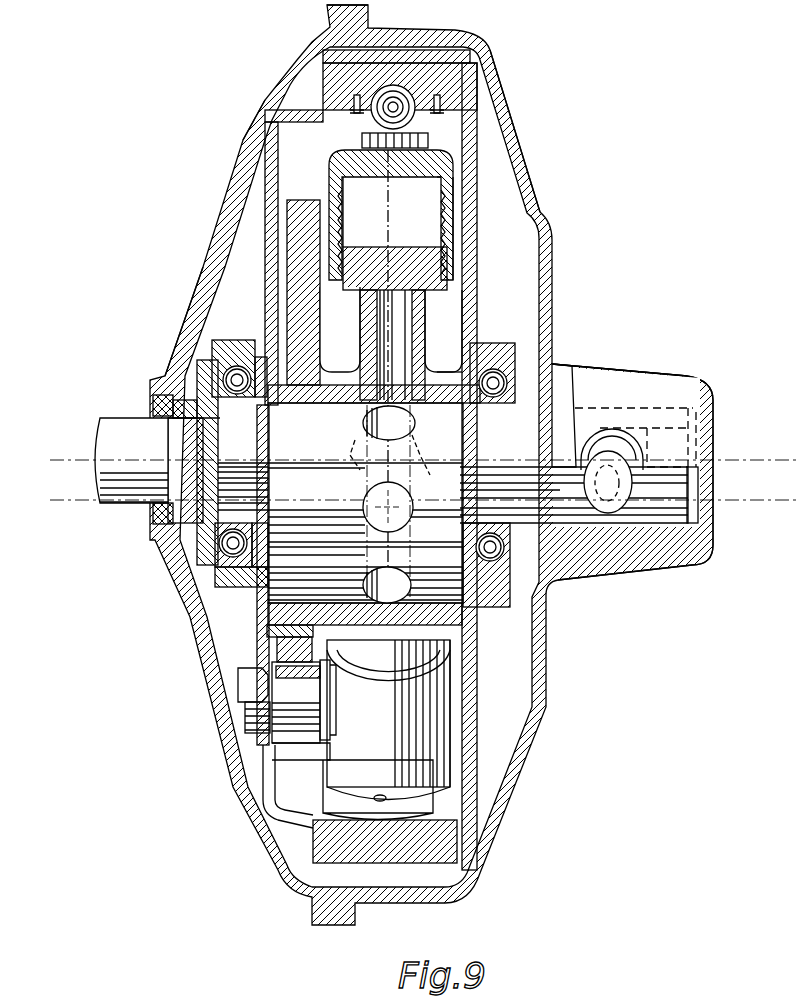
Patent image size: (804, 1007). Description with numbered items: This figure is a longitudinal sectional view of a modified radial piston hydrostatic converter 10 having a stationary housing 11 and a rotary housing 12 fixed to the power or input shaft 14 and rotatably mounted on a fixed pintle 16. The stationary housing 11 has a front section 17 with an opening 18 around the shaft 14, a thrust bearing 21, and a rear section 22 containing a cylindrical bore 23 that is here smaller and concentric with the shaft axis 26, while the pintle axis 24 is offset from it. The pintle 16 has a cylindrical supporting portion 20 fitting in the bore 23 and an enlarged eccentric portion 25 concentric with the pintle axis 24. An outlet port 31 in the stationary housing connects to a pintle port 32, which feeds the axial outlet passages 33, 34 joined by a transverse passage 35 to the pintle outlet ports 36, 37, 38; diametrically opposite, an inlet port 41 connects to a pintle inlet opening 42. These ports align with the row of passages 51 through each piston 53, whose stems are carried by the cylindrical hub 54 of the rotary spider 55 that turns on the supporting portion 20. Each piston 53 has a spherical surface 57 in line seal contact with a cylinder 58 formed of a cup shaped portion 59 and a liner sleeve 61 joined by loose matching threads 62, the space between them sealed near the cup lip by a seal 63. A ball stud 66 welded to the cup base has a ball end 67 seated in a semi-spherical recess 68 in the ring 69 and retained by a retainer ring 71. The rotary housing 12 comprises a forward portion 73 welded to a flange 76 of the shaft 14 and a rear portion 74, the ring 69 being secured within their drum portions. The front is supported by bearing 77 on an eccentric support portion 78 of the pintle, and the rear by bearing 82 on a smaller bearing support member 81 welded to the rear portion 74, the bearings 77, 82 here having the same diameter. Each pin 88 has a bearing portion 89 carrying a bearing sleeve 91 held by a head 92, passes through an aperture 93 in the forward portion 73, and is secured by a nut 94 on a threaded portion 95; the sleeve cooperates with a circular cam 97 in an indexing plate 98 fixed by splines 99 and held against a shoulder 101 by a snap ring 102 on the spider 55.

The hydrostatic converter 10 is at (208, 218).
The stationary housing 11 is at (255, 140).
The rotary housing 12 is at (273, 183).
The power shaft 14 is at (127, 430).
The pintle 16 is at (560, 420).
The front section 17 is at (204, 272).
The opening 18 is at (155, 522).
The cylindrical supporting portion 20 is at (553, 575).
The thrust bearing 21 is at (200, 410).
The rear section 22 is at (548, 230).
The cylindrical bore 23 is at (632, 410).
The pintle axis 24 is at (88, 505).
The enlarged eccentric portion 25 is at (278, 582).
The shaft axis 26 is at (86, 465).
The outlet port 31 is at (584, 456).
The pintle port 32 is at (640, 494).
The axial outlet passage 33 is at (440, 432).
The axial outlet passage 34 is at (415, 487).
The transverse passage 35 is at (408, 445).
The outlet port 36 is at (365, 424).
The outlet port 37 is at (366, 510).
The outlet port 38 is at (366, 585).
The inlet port 41 is at (535, 525).
The pintle inlet opening 42 is at (580, 438).
The passage 51 is at (410, 362).
The piston 53 is at (362, 265).
The cylindrical hub portion 54 is at (292, 403).
The rotary spider 55 is at (367, 313).
The spherical surface 57 is at (440, 280).
The cylinder 58 is at (456, 166).
The cup shaped portion 59 is at (345, 162).
The cylindrical liner sleeve 61 is at (348, 185).
The thread 62 is at (340, 203).
The seal 63 is at (460, 268).
The ball stud 66 is at (398, 148).
The ball end 67 is at (412, 113).
The semi-spherical bearing recess 68 is at (378, 103).
The ring 69 is at (470, 96).
The retainer ring 71 is at (357, 112).
The forward portion 73 is at (278, 237).
The rear portion 74 is at (470, 233).
The flange 76 is at (233, 343).
The bearing 77 is at (230, 375).
The cylindrical eccentric support portion 78 is at (265, 450).
The bearing support member 81 is at (508, 360).
The bearing 82 is at (500, 384).
The pin 88 is at (333, 749).
The cylindrical bearing portion 89 is at (292, 728).
The bearing sleeve 91 is at (326, 672).
The head 92 is at (334, 693).
The aperture 93 is at (282, 722).
The nut 94 is at (245, 680).
The threaded portion 95 is at (246, 712).
The circular cam 97 is at (282, 797).
The indexing plate 98 is at (290, 648).
The splines 99 is at (297, 700).
The shoulder 101 is at (336, 672).
The snap ring 102 is at (278, 632).